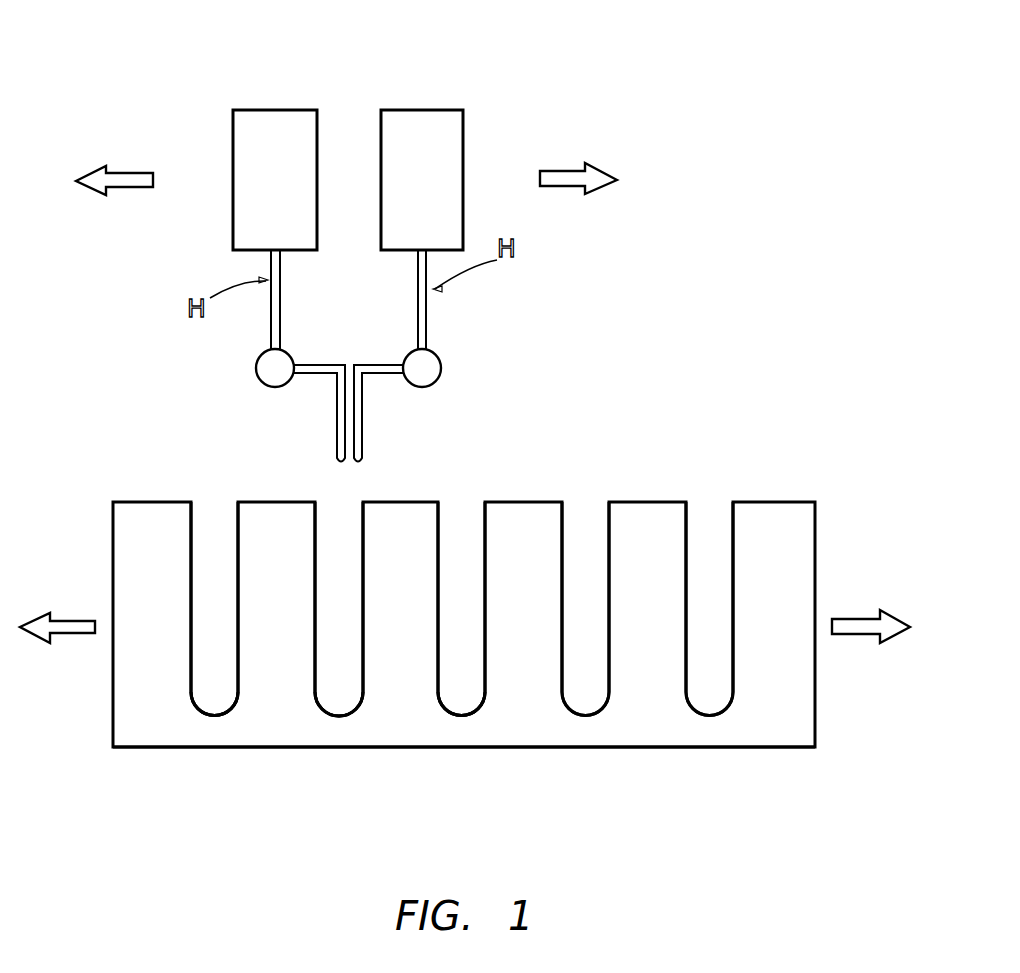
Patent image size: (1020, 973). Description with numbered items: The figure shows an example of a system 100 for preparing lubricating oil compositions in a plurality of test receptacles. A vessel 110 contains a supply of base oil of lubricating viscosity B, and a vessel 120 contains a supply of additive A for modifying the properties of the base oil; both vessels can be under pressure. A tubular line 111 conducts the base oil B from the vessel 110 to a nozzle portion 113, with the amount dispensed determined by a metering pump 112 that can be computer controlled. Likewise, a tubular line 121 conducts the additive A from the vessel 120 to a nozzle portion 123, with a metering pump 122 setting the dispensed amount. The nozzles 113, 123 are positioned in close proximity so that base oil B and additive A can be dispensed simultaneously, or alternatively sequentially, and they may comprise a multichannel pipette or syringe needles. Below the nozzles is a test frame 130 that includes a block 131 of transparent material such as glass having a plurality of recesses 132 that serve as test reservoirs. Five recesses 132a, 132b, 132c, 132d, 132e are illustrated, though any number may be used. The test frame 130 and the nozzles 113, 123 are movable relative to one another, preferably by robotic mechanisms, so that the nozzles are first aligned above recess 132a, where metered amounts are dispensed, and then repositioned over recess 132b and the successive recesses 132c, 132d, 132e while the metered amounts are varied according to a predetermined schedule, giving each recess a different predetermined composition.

The system 100 is at (423, 63).
The vessel 110 is at (255, 110).
The vessel 120 is at (463, 140).
The tubular line 111 is at (270, 330).
The tubular line 121 is at (427, 337).
The metering pump 112 is at (257, 373).
The metering pump 122 is at (441, 365).
The nozzle portion 113 is at (337, 422).
The nozzle portion 123 is at (363, 405).
The test frame 130 is at (460, 780).
The block 131 is at (528, 747).
The recesses 132 is at (215, 716).
The recess 132a is at (214, 525).
The recess 132b is at (335, 523).
The recess 132c is at (457, 523).
The recess 132d is at (580, 523).
The recess 132e is at (706, 523).